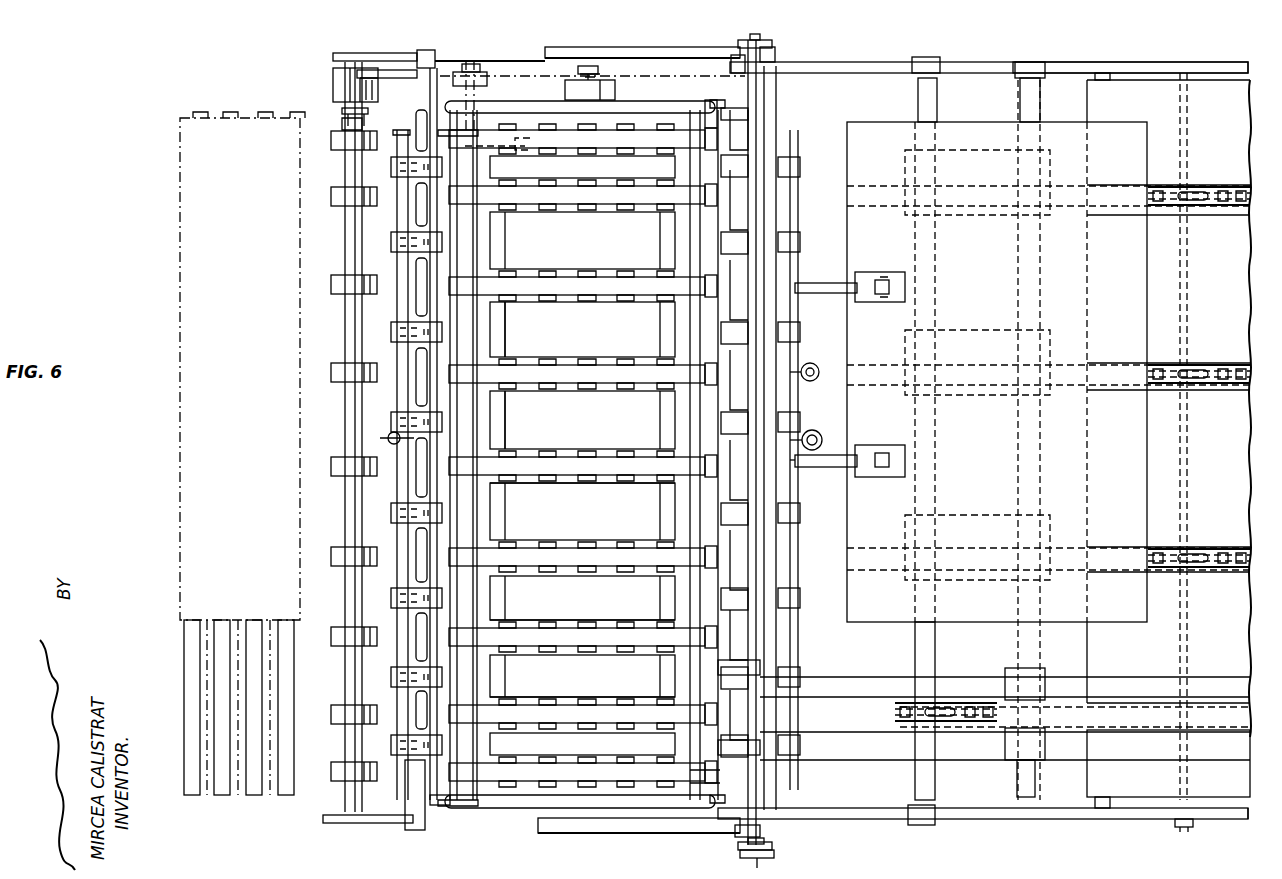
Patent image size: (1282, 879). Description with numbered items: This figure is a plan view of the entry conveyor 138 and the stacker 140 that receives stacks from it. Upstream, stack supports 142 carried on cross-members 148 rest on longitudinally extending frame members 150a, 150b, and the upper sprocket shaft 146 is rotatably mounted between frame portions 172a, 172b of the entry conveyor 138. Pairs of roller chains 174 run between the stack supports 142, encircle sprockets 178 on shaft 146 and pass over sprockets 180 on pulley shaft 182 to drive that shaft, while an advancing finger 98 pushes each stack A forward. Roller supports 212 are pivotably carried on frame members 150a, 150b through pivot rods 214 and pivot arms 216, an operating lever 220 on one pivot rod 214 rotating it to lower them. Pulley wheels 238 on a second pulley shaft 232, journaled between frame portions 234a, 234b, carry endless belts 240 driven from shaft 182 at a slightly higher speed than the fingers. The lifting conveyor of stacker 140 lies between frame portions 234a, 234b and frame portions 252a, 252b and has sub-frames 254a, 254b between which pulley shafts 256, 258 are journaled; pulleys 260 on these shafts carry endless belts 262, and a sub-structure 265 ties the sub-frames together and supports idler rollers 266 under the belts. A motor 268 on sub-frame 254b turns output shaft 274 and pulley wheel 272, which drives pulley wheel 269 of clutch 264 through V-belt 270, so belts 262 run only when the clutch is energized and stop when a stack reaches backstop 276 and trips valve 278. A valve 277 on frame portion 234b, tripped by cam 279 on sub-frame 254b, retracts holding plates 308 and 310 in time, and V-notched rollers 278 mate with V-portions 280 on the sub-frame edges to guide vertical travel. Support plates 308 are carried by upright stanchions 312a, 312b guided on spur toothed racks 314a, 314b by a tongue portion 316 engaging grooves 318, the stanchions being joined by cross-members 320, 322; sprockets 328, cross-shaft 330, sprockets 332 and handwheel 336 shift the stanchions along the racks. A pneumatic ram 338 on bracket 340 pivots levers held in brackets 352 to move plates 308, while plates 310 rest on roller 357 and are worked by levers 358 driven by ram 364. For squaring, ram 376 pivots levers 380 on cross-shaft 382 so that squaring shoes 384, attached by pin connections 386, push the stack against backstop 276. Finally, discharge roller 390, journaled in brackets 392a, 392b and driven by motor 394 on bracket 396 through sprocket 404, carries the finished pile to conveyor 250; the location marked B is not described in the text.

The advancing finger 98 is at (1150, 367).
The entry conveyor 138 is at (1050, 46).
The stacker portion 140 is at (533, 25).
The stack supports 142 is at (1105, 413).
The upper sprocket shaft 146 is at (928, 770).
The cross-members 148 is at (1106, 810).
The longitudinally extending frame member 150a is at (1220, 818).
The longitudinally extending frame member 150b is at (1213, 62).
The frame portion 172a is at (932, 822).
The frame portion 172b is at (932, 60).
The roller chains 174 is at (1232, 702).
The sprockets 178 is at (933, 703).
The sprockets 180 is at (1033, 700).
The pulley shaft 182 is at (1031, 773).
The roller supports 212 is at (1050, 732).
The pivot rods 214 is at (1186, 615).
The pivot arms 216 is at (1207, 552).
The operating lever 220 is at (1175, 828).
The pulley shaft 232 is at (758, 772).
The frame portion 234a is at (707, 773).
The frame portion 234b is at (771, 77).
The pulley wheels 238 is at (763, 717).
The endless belts 240 is at (888, 736).
The conveyor 250 is at (208, 106).
The frame portion 252a is at (410, 830).
The frame portion 252b is at (423, 50).
The sub-frame 254a is at (505, 812).
The sub-frame 254b is at (621, 99).
The pulley shaft 256 is at (690, 405).
The pulley shaft 258 is at (470, 425).
The pulleys 260 is at (691, 445).
The endless belts 262 is at (640, 270).
The clutch 264 is at (488, 76).
The sub-structure 265 is at (505, 312).
The idler rollers 266 is at (543, 544).
The motor 268 is at (565, 90).
The pulley wheel 269 is at (470, 66).
The V-belt 270 is at (529, 62).
The pulley wheel 272 is at (590, 65).
The output shaft 274 is at (600, 72).
The backstop 276 is at (440, 697).
The valve 277 is at (741, 130).
The V-notched rollers 278 is at (440, 104).
The cam 279 is at (714, 102).
The V-portions 280 is at (452, 808).
The support plates 308 is at (720, 588).
The support plates 310 is at (452, 515).
The upright stanchion 312a is at (763, 813).
The upright stanchion 312b is at (768, 62).
The spur toothed rack 314a is at (570, 825).
The spur toothed rack 314b is at (565, 47).
The tongue portion 316 is at (766, 56).
The grooves 318 is at (715, 55).
The cross-member 320 is at (776, 196).
The cross-member 322 is at (780, 456).
The sprockets 328 is at (743, 40).
The cross-shaft 330 is at (755, 34).
The sprocket 332 is at (767, 47).
The handwheel 336 is at (773, 862).
The pneumatic ram 338 is at (835, 413).
The bracket 340 is at (822, 438).
The brackets 352 is at (763, 757).
The roller 357 is at (413, 488).
The lever 358 is at (395, 418).
The ram 364 is at (388, 438).
The pneumatic ram 376 is at (820, 374).
The levers 380 is at (833, 283).
The cross-shaft 382 is at (808, 478).
The squaring shoe 384 is at (905, 287).
The pin connection 386 is at (895, 258).
The discharge roller 390 is at (330, 195).
The bracket 392a is at (324, 820).
The bracket 392b is at (333, 53).
The motor 394 is at (332, 88).
The bracket 396 is at (385, 70).
The sprocket 404 is at (342, 110).
The stack A is at (1113, 622).
The region B is at (710, 622).